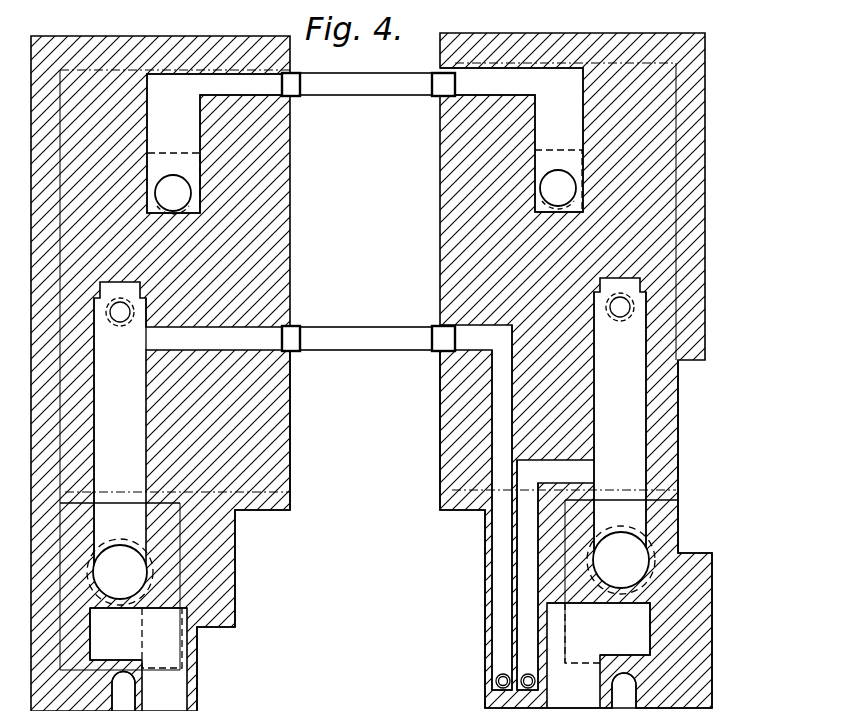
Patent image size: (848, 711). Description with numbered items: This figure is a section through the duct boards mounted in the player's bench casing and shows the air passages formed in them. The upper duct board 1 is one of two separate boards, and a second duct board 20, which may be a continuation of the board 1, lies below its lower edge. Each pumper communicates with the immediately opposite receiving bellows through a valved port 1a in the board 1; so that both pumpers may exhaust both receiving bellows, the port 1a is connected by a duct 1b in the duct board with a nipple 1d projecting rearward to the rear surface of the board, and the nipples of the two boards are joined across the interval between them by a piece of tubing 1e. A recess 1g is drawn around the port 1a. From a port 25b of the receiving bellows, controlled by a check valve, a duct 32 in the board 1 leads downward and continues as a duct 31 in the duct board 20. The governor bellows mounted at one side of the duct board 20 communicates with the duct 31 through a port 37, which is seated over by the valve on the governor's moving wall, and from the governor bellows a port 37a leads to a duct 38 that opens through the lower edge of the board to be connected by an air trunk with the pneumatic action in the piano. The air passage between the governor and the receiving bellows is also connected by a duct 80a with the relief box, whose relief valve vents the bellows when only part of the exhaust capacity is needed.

The duct board 1 is at (440, 244).
The port 1a is at (365, 192).
The duct 1b is at (555, 91).
The nipple 1d is at (428, 114).
The piece of tubing 1e is at (377, 86).
The recess 1g is at (554, 152).
The duct board 20 is at (484, 567).
The port 25b is at (612, 352).
The duct 31 is at (369, 513).
The duct 32 is at (370, 432).
The port 37 is at (371, 565).
The port 37a is at (370, 635).
The duct 38 is at (374, 692).
The duct 80a is at (510, 655).